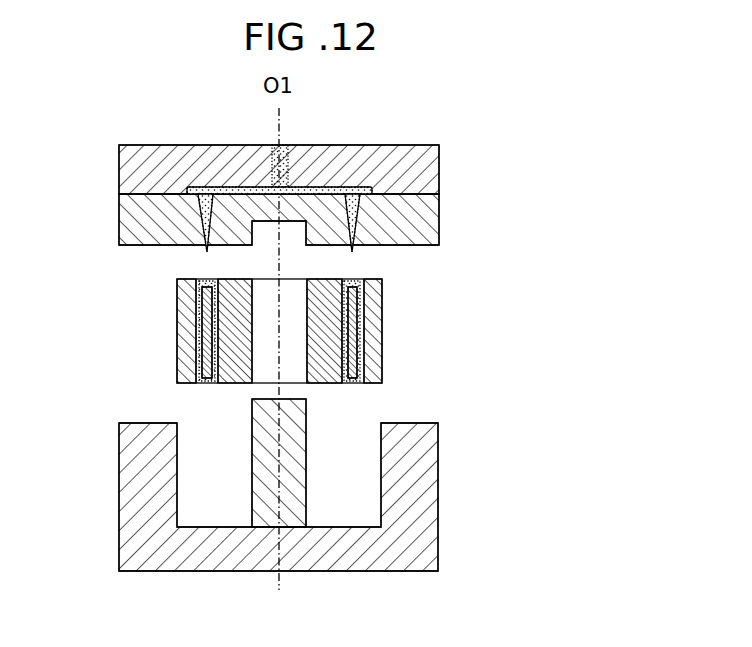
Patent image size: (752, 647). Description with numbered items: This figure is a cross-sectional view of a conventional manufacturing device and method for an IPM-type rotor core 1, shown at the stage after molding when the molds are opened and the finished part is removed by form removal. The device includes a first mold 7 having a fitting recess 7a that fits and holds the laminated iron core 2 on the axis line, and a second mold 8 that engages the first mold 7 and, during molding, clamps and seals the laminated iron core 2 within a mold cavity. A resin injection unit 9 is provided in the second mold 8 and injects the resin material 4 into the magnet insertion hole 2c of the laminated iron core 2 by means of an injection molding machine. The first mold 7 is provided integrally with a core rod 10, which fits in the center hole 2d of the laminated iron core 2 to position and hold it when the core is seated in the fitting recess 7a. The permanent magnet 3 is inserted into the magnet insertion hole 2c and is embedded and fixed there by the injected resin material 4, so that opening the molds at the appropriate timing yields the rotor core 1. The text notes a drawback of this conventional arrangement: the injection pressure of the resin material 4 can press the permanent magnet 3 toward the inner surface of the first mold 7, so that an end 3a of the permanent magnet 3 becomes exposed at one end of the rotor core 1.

The rotor core 1 is at (283, 341).
The laminated iron core 2 is at (168, 278).
The magnet insertion hole 2c is at (195, 358).
The center hole 2d is at (257, 365).
The permanent magnet 3 is at (205, 315).
The end of the permanent magnet 3a is at (207, 383).
The resin material 4 is at (194, 331).
The first mold 7 is at (448, 490).
The fitting recess 7a is at (347, 517).
The second mold 8 is at (448, 162).
The resin injection unit 9 is at (333, 178).
The core rod 10 is at (302, 500).